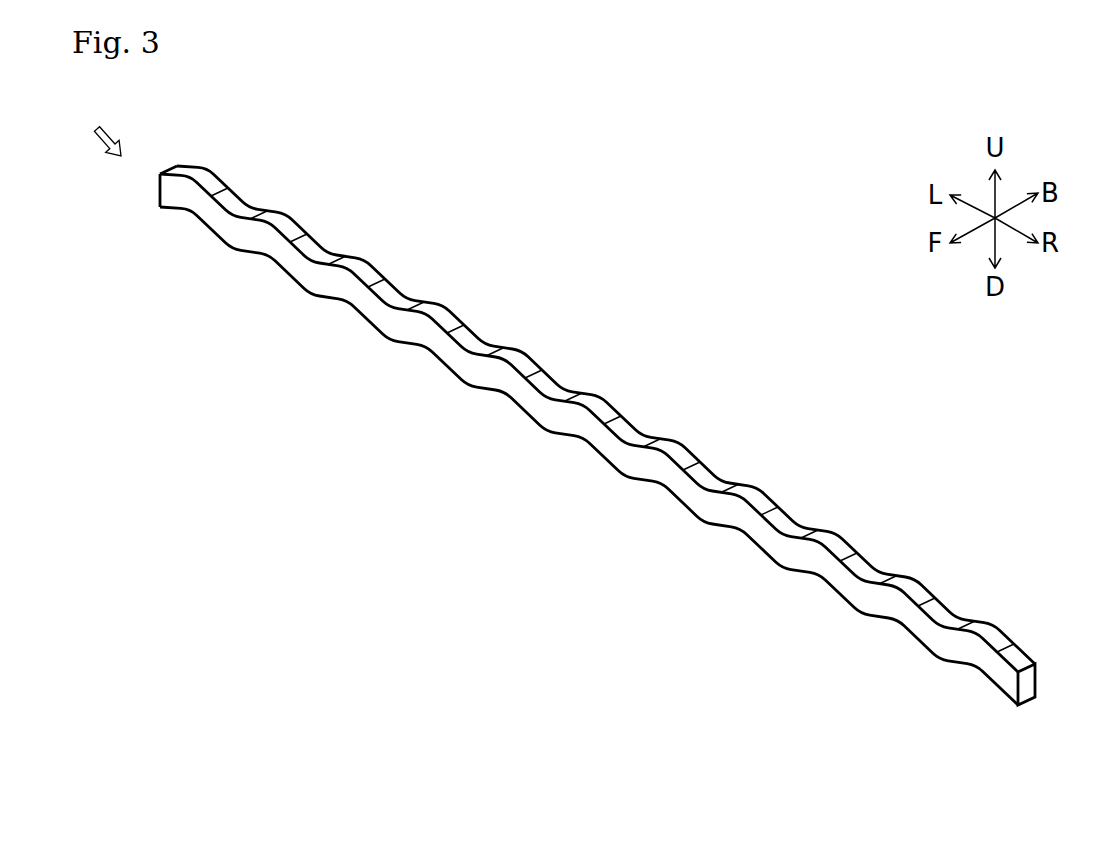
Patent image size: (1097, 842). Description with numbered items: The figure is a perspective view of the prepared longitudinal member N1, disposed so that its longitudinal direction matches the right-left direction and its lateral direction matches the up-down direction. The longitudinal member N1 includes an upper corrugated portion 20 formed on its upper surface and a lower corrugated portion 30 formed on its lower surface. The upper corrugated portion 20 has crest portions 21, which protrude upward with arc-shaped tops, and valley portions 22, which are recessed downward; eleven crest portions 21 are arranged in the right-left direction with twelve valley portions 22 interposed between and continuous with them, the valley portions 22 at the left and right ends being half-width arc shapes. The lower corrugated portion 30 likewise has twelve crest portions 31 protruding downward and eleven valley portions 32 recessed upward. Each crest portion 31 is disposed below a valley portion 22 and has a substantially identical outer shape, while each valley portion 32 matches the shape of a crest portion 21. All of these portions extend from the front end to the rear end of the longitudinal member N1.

The upper corrugated portion 20 is at (580, 437).
The crest portion 21 is at (602, 364).
The valley portion 22 is at (601, 379).
The lower corrugated portion 30 is at (570, 493).
The crest portion 31 is at (570, 493).
The valley portion 32 is at (567, 477).
The longitudinal member N1 is at (94, 129).